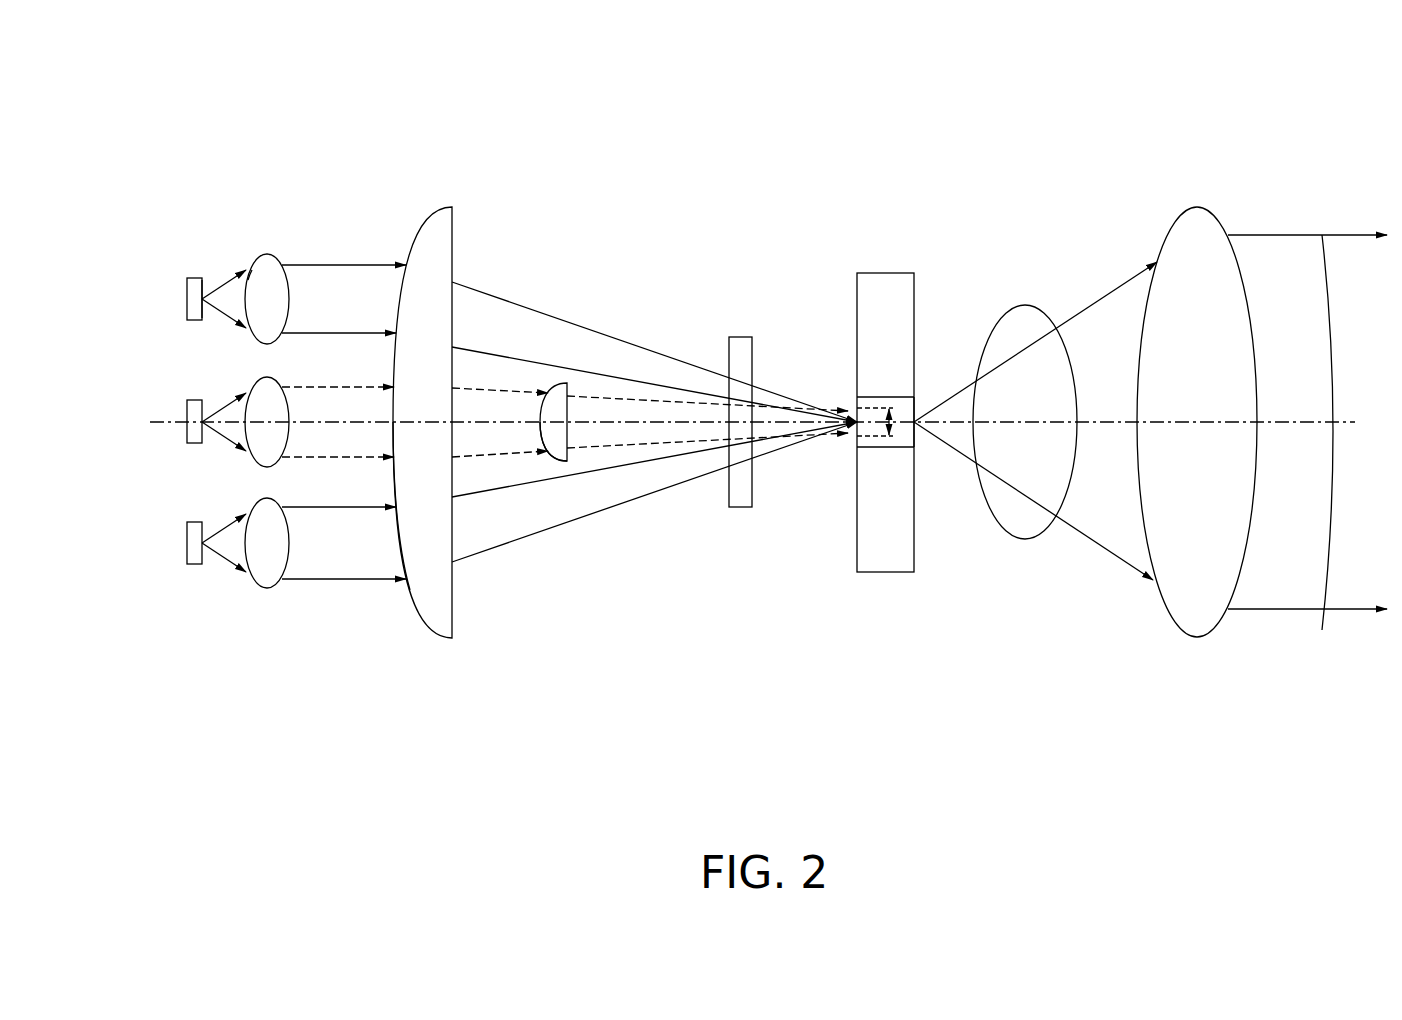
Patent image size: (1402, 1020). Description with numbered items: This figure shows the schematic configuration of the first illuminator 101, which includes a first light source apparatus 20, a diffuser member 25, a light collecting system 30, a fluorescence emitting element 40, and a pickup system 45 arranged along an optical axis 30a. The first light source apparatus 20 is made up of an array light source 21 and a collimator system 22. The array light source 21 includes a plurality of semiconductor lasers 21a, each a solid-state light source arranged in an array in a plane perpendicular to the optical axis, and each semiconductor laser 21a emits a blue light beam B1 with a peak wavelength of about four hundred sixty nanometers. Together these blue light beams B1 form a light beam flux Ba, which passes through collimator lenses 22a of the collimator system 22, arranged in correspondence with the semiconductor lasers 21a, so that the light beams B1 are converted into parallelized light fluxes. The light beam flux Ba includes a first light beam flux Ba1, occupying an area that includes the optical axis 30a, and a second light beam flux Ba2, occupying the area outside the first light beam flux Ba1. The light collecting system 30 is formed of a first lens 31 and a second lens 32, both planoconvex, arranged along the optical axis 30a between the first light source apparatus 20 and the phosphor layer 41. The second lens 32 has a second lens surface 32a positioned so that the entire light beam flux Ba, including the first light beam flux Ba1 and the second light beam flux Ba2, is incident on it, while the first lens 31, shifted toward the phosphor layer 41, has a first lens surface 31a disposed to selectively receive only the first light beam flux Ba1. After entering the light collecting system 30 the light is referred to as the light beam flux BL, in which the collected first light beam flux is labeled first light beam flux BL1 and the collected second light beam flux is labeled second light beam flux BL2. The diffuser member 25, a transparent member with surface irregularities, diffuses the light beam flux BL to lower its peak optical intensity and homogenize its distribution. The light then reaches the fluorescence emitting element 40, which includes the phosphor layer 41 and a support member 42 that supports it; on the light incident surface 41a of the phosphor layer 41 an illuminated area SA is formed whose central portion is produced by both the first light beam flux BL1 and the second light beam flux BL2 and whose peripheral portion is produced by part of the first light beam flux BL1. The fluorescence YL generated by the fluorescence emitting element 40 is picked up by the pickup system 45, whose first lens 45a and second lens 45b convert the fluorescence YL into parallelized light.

The first illuminator 101 is at (1110, 160).
The first light source apparatus 20 is at (290, 687).
The array light source 21 is at (194, 567).
The semiconductor laser 21a is at (190, 284).
The collimator system 22 is at (272, 594).
The collimator lens 22a is at (265, 267).
The blue light beam B1 is at (227, 327).
The light beam flux Ba is at (413, 174).
The first light beam flux Ba1 is at (352, 472).
The second light beam flux Ba2 is at (352, 590).
The light collecting system 30 is at (587, 687).
The optical axis 30a is at (161, 420).
The first lens 31 is at (560, 455).
The first lens surface 31a is at (553, 452).
The second lens 32 is at (446, 583).
The second lens surface 32a is at (404, 551).
The light beam flux BL is at (668, 222).
The first light beam flux BL1 is at (500, 459).
The second light beam flux BL2 is at (603, 390).
The diffuser member 25 is at (740, 500).
The fluorescence emitting element 40 is at (880, 576).
The phosphor layer 41 is at (906, 433).
The light incident surface 41a is at (840, 436).
The support member 42 is at (907, 537).
The illuminated area SA is at (913, 421).
The pickup system 45 is at (1162, 731).
The first lens 45a is at (1030, 530).
The second lens 45b is at (1173, 606).
The fluorescence YL is at (1322, 235).